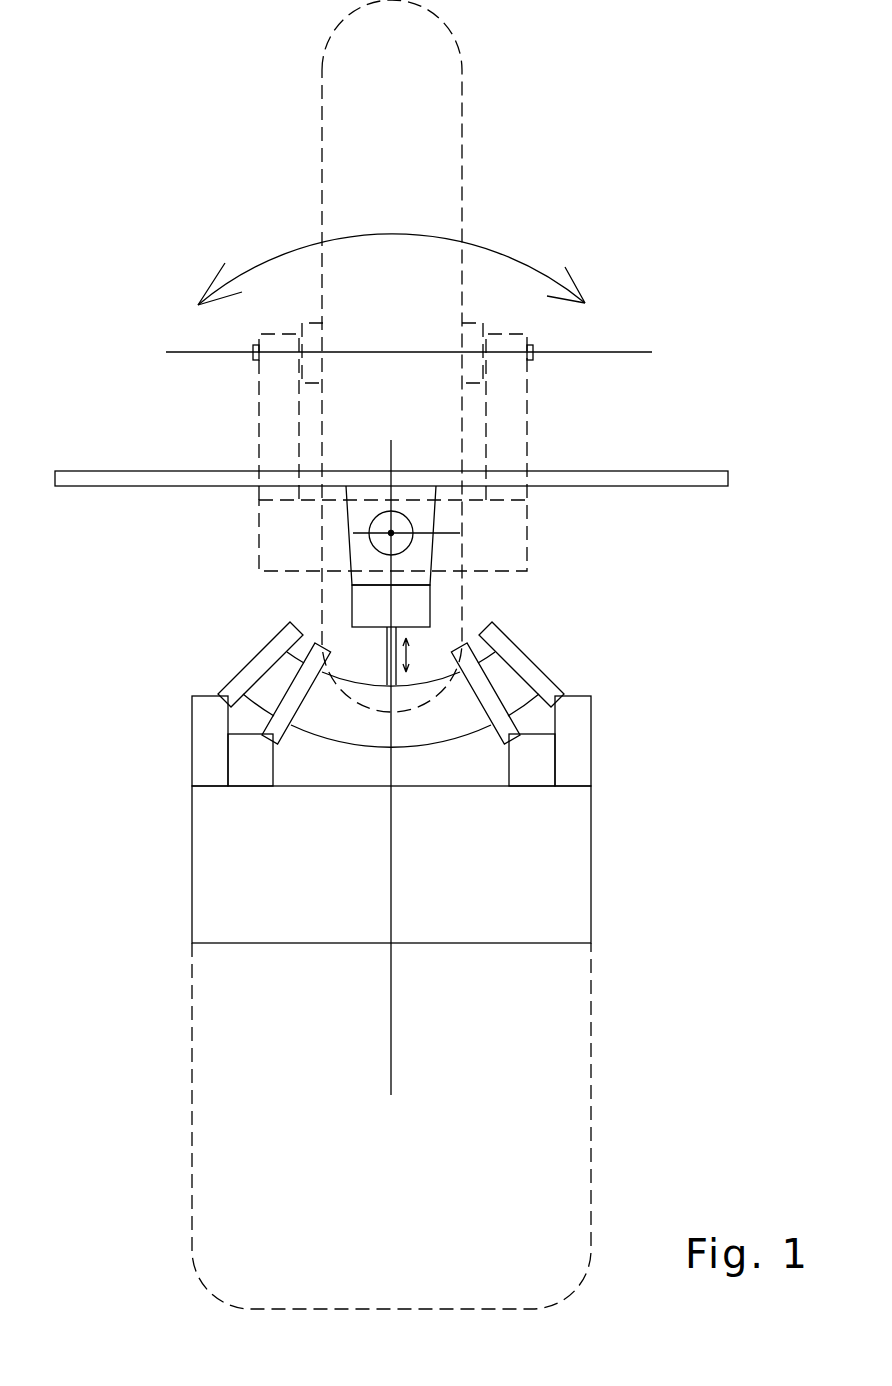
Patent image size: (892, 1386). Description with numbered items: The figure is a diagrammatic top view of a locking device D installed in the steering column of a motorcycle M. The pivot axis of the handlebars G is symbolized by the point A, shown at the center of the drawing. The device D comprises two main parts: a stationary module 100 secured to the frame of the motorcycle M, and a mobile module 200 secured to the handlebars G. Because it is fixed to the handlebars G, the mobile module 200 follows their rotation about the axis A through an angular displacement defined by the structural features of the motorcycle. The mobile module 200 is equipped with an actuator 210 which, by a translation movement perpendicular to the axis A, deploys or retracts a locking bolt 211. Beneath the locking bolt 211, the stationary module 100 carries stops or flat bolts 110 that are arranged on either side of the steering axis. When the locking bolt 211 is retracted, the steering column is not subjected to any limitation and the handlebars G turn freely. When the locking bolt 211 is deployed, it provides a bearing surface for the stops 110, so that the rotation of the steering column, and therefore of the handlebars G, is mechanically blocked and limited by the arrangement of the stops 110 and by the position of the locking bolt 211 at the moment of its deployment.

The stationary module 100 is at (387, 725).
The stops or flat bolts 110 is at (282, 723).
The mobile module 200 is at (478, 547).
The actuator 210 is at (420, 607).
The locking bolt 211 is at (388, 668).
The pivot axis A is at (353, 533).
The locking device D is at (577, 614).
The handlebars G is at (679, 476).
The motorcycle M is at (648, 958).